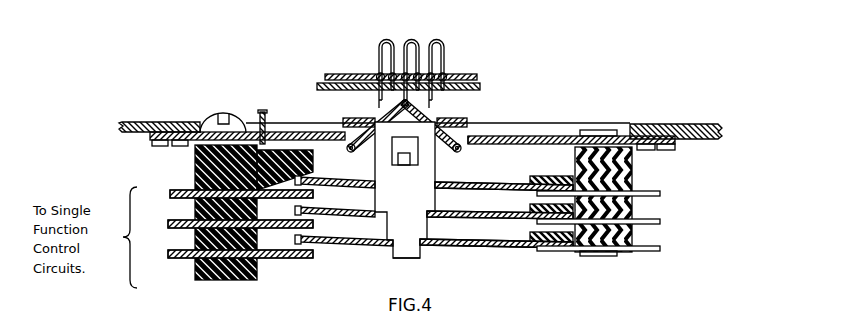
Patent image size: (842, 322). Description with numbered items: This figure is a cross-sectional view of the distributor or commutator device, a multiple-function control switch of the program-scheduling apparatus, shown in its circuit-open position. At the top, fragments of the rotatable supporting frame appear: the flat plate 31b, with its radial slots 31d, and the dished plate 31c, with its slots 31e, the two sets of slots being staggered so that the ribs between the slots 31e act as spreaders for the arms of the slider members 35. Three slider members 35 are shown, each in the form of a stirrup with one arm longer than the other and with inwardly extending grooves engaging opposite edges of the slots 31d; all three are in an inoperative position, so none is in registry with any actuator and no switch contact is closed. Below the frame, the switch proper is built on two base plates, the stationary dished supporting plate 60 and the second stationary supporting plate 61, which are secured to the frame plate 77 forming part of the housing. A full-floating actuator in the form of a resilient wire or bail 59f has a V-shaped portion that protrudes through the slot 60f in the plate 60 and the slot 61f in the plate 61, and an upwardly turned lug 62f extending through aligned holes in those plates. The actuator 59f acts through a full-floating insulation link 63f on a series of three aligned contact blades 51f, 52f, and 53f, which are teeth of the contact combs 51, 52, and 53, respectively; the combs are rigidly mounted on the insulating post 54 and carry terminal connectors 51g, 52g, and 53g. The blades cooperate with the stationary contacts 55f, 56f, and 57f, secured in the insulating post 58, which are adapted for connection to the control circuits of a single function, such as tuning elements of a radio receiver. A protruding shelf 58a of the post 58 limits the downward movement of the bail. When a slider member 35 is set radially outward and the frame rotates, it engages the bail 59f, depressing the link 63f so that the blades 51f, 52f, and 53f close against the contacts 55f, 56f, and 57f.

The slider members 35 is at (436, 39).
The slots in plate 31b 31d is at (378, 74).
The flat disc or plate 31b is at (447, 74).
The dished disc or plate 31c is at (481, 88).
The slots in plate 31c 31e is at (372, 94).
The slot in dished supporting plate 60f is at (440, 114).
The actuator bail 59f is at (461, 151).
The slot in second supporting plate 61f is at (376, 155).
The insulation link 63f is at (399, 259).
The dished supporting plate 60 is at (505, 136).
The second supporting plate 61 is at (520, 146).
The frame plate 77 is at (660, 125).
The lug 62f is at (266, 120).
The post of insulation material 58 is at (195, 168).
The protruding shelf 58a is at (313, 160).
The stationary contact 57f is at (182, 198).
The stationary contact 56f is at (180, 228).
The stationary contact 55f is at (185, 259).
The post of insulation material 54 is at (632, 172).
The contact comb 53 is at (530, 187).
The contact blade 53f is at (470, 191).
The contact comb 52 is at (530, 215).
The contact blade 52f is at (466, 220).
The contact comb 51 is at (534, 249).
The contact blade 51f is at (452, 249).
The terminal connector 53g is at (658, 196).
The terminal connector 52g is at (658, 224).
The terminal connector 51g is at (658, 251).